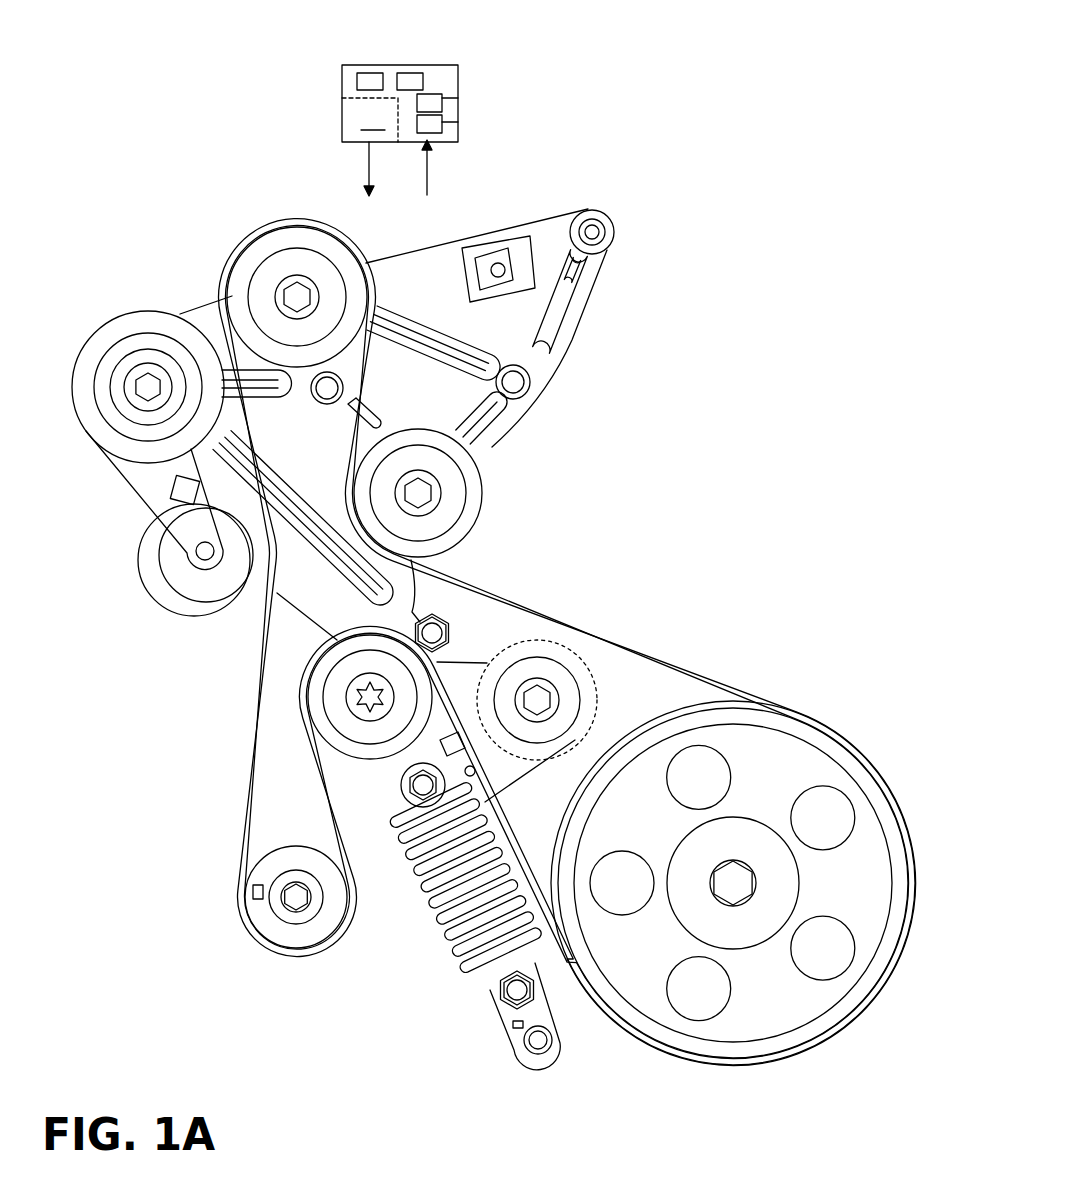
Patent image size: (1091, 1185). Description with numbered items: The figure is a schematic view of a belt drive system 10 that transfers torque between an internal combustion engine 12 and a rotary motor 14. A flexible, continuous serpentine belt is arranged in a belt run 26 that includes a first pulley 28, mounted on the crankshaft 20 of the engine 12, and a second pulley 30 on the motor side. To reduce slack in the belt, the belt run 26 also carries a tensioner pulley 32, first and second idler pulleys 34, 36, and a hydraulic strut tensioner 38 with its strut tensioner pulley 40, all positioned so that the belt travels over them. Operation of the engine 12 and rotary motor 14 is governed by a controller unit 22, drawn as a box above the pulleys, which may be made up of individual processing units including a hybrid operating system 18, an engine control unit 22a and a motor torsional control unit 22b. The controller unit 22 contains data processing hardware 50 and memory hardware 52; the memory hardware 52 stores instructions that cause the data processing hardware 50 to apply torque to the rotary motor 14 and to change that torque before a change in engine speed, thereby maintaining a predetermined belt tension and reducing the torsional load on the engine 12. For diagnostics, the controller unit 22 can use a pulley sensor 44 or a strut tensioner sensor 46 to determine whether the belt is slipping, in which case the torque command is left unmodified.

The belt drive system 10 is at (88, 285).
The internal combustion engine 12 is at (584, 194).
The rotary motor 14 is at (310, 910).
The hybrid operating system 18 is at (451, 104).
The crankshaft 20 is at (755, 843).
The controller unit 22 is at (489, 105).
The engine control unit 22a is at (458, 98).
The motor torsional control unit 22b is at (458, 122).
The belt run 26 is at (222, 766).
The first pulley 28 is at (765, 775).
The second pulley 30 is at (252, 929).
The tensioner pulley 32 is at (160, 578).
The first idler pulley 34 is at (290, 242).
The second idler pulley 36 is at (478, 492).
The hydraulic strut tensioner 38 is at (437, 937).
The strut tensioner pulley 40 is at (330, 692).
The pulley sensor 44 is at (250, 890).
The strut tensioner sensor 46 is at (510, 1027).
The data processing hardware 50 is at (364, 72).
The memory hardware 52 is at (408, 72).